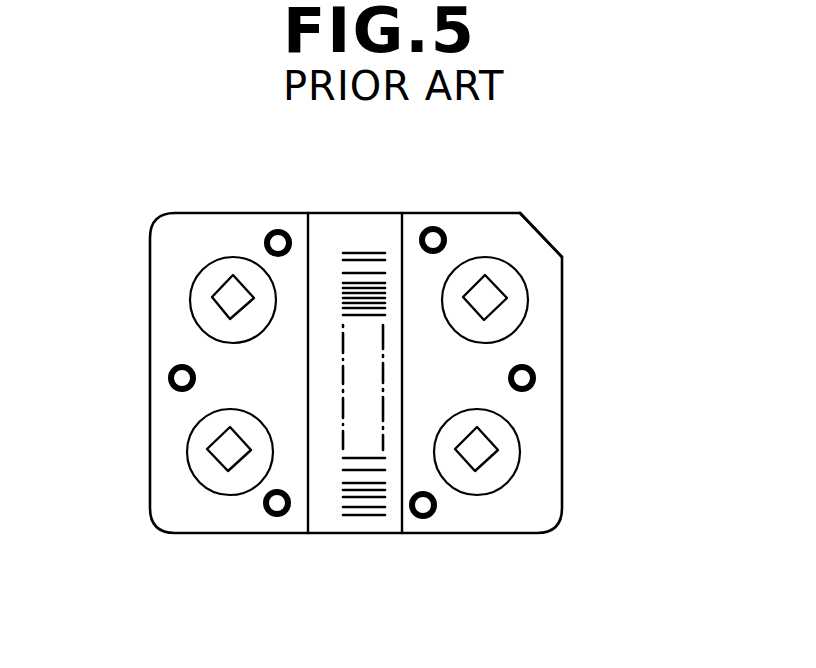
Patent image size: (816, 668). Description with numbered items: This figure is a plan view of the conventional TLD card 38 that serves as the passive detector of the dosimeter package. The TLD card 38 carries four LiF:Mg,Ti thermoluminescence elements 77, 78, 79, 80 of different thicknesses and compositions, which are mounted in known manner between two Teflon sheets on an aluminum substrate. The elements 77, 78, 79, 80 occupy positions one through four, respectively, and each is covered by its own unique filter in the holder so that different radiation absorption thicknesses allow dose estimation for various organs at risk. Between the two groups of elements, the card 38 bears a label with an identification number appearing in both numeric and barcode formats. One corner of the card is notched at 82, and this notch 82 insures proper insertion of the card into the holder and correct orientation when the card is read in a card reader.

The TLD card 38 is at (210, 205).
The thermoluminescence element 77 is at (480, 453).
The thermoluminescence element 78 is at (490, 300).
The thermoluminescence element 79 is at (229, 297).
The thermoluminescence element 80 is at (228, 457).
The notch 82 is at (545, 236).